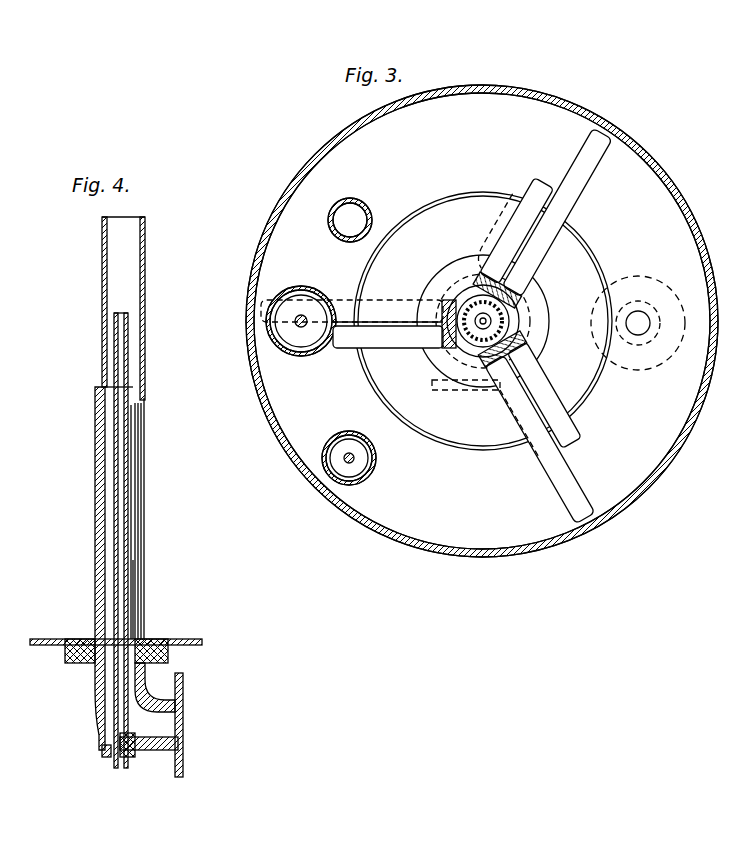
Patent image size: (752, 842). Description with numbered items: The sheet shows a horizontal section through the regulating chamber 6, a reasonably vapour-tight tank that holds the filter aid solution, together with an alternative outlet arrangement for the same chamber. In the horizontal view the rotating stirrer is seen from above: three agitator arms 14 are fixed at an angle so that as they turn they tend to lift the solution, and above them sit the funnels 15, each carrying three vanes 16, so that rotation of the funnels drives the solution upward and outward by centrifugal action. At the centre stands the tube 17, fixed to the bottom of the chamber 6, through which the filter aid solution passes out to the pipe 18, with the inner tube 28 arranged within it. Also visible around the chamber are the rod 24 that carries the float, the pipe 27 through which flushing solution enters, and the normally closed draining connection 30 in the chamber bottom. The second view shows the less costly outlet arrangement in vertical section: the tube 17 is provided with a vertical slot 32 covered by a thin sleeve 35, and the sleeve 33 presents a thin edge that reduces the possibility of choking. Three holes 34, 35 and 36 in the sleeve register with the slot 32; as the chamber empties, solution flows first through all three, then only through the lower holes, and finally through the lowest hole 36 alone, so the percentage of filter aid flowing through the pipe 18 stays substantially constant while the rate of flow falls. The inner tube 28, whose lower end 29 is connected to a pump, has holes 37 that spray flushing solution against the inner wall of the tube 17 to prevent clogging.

In FIG. 3, the regulating chamber 6 is at (482, 321).
In FIG. 3, the agitator arms 14 is at (580, 166).
In FIG. 3, the funnels 15 is at (432, 218).
In FIG. 3, the vanes 16 is at (537, 196).
In FIG. 3, the tube 17 is at (500, 321).
In FIG. 4, the tube 17 is at (146, 269).
In FIG. 4, the pipe 18 is at (152, 692).
In FIG. 3, the rod 24 is at (300, 330).
In FIG. 3, the pipe 27 is at (356, 212).
In FIG. 3, the tube 28 is at (505, 310).
In FIG. 4, the tube 28 is at (128, 441).
In FIG. 4, the lower end 29 is at (112, 766).
In FIG. 3, the draining connection 30 is at (643, 335).
In FIG. 4, the vertical slot 32 is at (139, 468).
In FIG. 4, the sleeve 33 is at (136, 491).
In FIG. 4, the hole 34 is at (145, 416).
In FIG. 4, the thin sleeve 35 is at (142, 515).
In FIG. 4, the hole 36 is at (140, 616).
In FIG. 4, the holes 37 is at (118, 330).